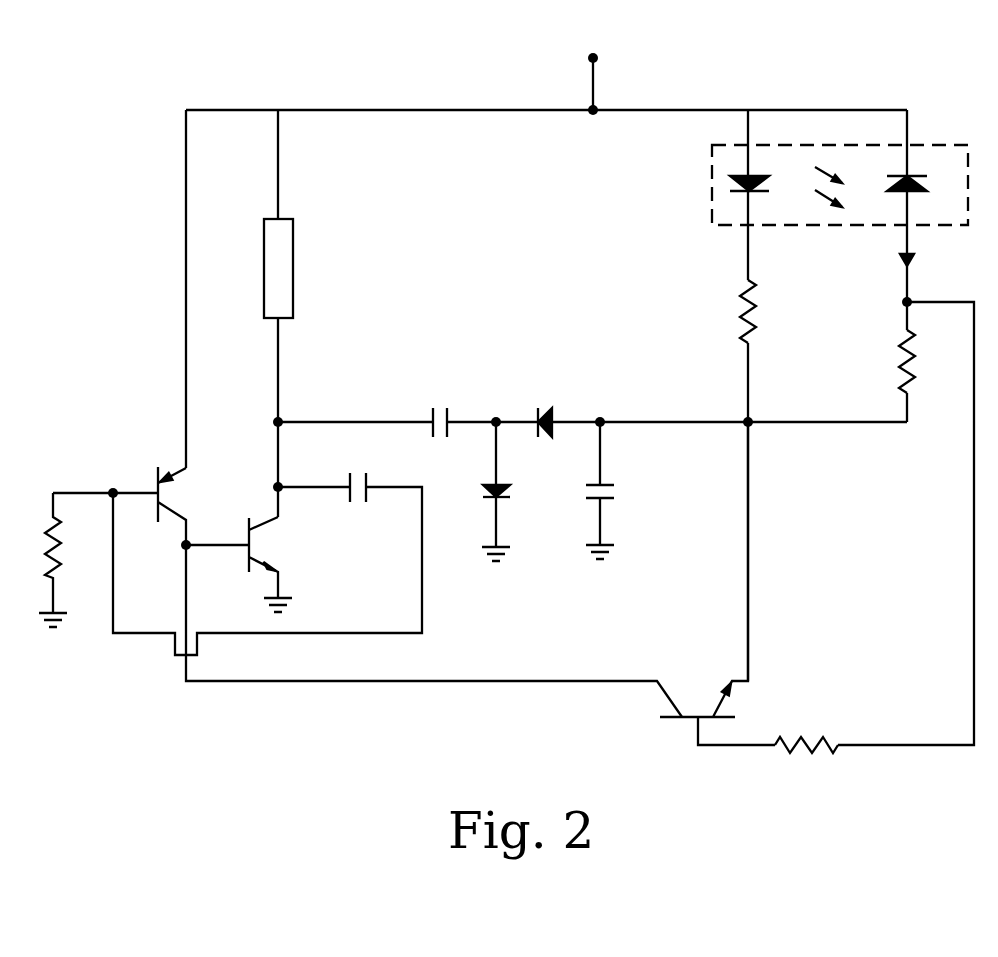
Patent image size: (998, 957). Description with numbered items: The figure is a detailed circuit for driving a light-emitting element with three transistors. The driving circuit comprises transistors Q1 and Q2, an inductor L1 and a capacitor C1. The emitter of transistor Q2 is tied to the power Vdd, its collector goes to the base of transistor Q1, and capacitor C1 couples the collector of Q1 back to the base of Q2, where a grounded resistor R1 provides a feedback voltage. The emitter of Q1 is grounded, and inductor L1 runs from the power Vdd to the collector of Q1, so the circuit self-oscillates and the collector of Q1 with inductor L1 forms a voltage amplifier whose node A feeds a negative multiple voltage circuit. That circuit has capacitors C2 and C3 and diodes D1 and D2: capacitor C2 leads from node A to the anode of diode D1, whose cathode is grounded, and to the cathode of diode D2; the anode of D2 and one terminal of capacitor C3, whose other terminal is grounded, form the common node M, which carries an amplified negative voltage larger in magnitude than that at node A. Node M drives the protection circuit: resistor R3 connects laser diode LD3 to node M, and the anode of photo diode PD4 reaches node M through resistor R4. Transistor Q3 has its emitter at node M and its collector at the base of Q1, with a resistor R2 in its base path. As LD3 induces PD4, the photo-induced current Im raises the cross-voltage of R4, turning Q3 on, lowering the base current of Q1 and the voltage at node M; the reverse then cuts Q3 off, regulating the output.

The power Vdd is at (598, 39).
The inductor L1 is at (299, 268).
The node A is at (295, 403).
The capacitor C2 is at (443, 405).
The diode D2 is at (543, 405).
The common node M is at (601, 403).
The capacitor C1 is at (358, 470).
The diode D1 is at (515, 497).
The capacitor C3 is at (622, 497).
The transistor Q2 is at (184, 506).
The transistor Q1 is at (276, 557).
The resistor R1 is at (63, 553).
The laser diode LD3 is at (786, 189).
The photo diode PD4 is at (932, 193).
The photo-induced current Im is at (924, 266).
The resistor R3 is at (734, 311).
The resistor R4 is at (924, 363).
The transistor Q3 is at (717, 583).
The resistor R2 is at (806, 733).